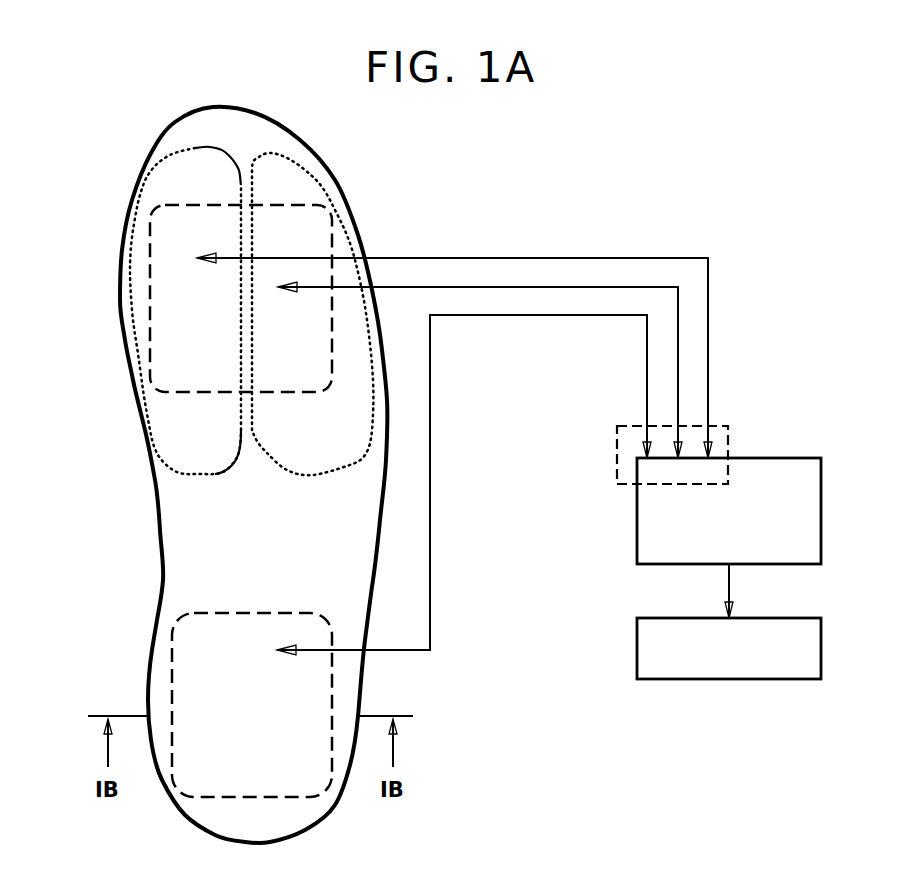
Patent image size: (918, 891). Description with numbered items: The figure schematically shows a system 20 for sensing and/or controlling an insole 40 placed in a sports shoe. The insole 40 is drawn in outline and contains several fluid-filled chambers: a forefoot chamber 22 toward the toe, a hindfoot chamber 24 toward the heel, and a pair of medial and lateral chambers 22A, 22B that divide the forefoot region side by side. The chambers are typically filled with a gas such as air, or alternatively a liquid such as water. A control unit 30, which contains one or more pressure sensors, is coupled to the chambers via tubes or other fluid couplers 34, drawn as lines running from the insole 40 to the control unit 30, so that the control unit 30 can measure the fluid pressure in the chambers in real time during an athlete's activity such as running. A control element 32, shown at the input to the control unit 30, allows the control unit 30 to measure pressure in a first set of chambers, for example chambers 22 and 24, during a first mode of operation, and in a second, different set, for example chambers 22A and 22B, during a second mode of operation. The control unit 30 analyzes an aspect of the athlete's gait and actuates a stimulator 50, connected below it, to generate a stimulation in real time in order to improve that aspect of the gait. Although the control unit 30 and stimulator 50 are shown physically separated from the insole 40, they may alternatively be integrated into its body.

The system 20 is at (175, 88).
The forefoot chamber 22 is at (150, 258).
The medial chamber 22A is at (170, 476).
The lateral chamber 22B is at (317, 477).
The hindfoot chamber 24 is at (213, 798).
The control unit 30 is at (822, 495).
The control element 32 is at (729, 430).
The fluid couplers 34 is at (570, 222).
The insole 40 is at (241, 324).
The stimulator 50 is at (822, 650).